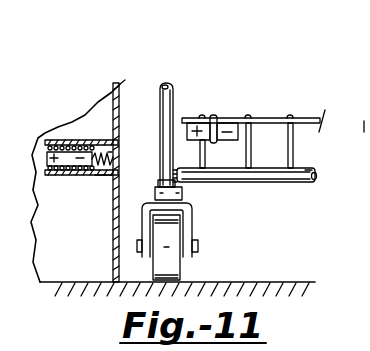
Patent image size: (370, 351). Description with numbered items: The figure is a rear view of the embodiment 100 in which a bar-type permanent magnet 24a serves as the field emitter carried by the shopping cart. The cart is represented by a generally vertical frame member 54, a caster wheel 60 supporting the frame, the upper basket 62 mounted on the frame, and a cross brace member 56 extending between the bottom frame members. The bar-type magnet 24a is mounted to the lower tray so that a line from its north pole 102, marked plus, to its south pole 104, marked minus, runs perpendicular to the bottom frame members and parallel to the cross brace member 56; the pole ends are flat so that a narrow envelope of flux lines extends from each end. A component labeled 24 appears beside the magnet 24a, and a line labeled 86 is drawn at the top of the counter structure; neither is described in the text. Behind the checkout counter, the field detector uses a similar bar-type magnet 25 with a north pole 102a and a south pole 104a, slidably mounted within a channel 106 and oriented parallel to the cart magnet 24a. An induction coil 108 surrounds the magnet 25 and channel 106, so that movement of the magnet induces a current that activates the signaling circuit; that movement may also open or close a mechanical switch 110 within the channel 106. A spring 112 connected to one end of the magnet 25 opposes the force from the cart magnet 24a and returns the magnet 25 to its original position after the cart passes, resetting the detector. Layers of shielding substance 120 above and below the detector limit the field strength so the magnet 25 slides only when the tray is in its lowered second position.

The bar-type magnet 25 is at (35, 138).
The spring 112 is at (95, 152).
The wall top surface 86 is at (121, 84).
The induction coil 108 is at (58, 140).
The channel 106 is at (120, 140).
The south pole 104a is at (88, 175).
The north pole 102a is at (47, 157).
The mechanical switch 110 is at (100, 176).
The shielding substance 120 is at (111, 176).
The vertical frame members 54 is at (176, 98).
The caster wheels 60 is at (181, 274).
The upper basket 62 is at (282, 117).
The battery pack 24 is at (226, 124).
The bar-type permanent magnet 24a is at (217, 115).
The embodiment 100 is at (278, 55).
The north pole 102 is at (190, 141).
The south pole 104 is at (228, 141).
The cross brace members 56 is at (308, 181).